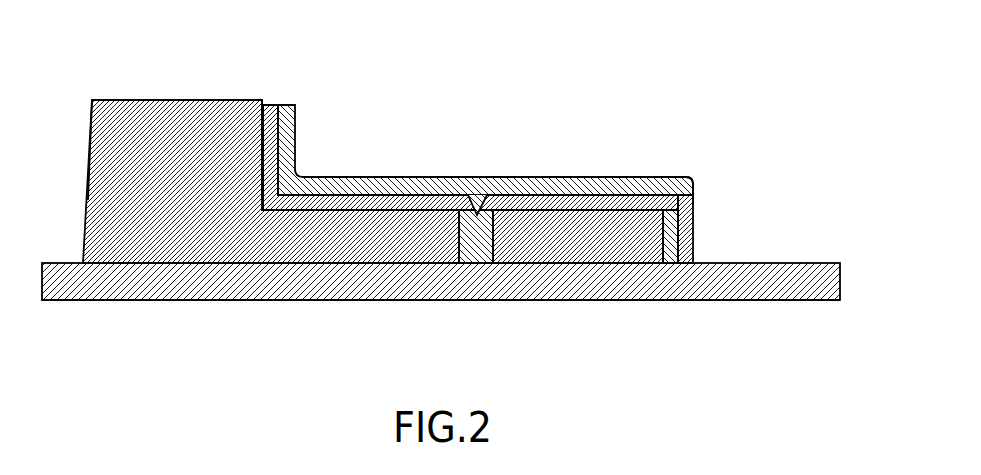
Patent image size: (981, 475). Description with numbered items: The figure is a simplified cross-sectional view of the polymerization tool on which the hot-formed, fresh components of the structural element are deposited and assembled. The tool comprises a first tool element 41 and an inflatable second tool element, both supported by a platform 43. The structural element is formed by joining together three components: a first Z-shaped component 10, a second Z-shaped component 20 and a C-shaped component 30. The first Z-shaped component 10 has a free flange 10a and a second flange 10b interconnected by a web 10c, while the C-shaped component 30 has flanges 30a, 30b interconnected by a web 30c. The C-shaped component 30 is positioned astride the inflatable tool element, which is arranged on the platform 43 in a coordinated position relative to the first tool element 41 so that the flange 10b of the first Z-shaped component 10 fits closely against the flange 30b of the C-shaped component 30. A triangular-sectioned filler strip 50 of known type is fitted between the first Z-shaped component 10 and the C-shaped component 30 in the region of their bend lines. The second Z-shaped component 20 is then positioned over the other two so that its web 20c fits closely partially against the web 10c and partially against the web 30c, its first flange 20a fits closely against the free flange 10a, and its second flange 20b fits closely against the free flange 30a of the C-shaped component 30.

The first Z-shaped component 10 is at (364, 227).
The free flange of first Z-shaped component 10a is at (262, 147).
The second flange of first Z-shaped component 10b is at (459, 238).
The web of first Z-shaped component 10c is at (328, 177).
The second Z-shaped component 20 is at (510, 166).
The first flange of second Z-shaped component 20a is at (296, 128).
The second flange of second Z-shaped component 20b is at (694, 234).
The web of second Z-shaped component 20c is at (417, 177).
The C-shaped component 30 is at (612, 228).
The free flange of C-shaped component 30a is at (694, 205).
The flange of C-shaped component 30b is at (493, 245).
The web of C-shaped component 30c is at (605, 177).
The first tool element 41 is at (180, 277).
The platform 43 is at (233, 301).
The filler strip 50 is at (480, 177).